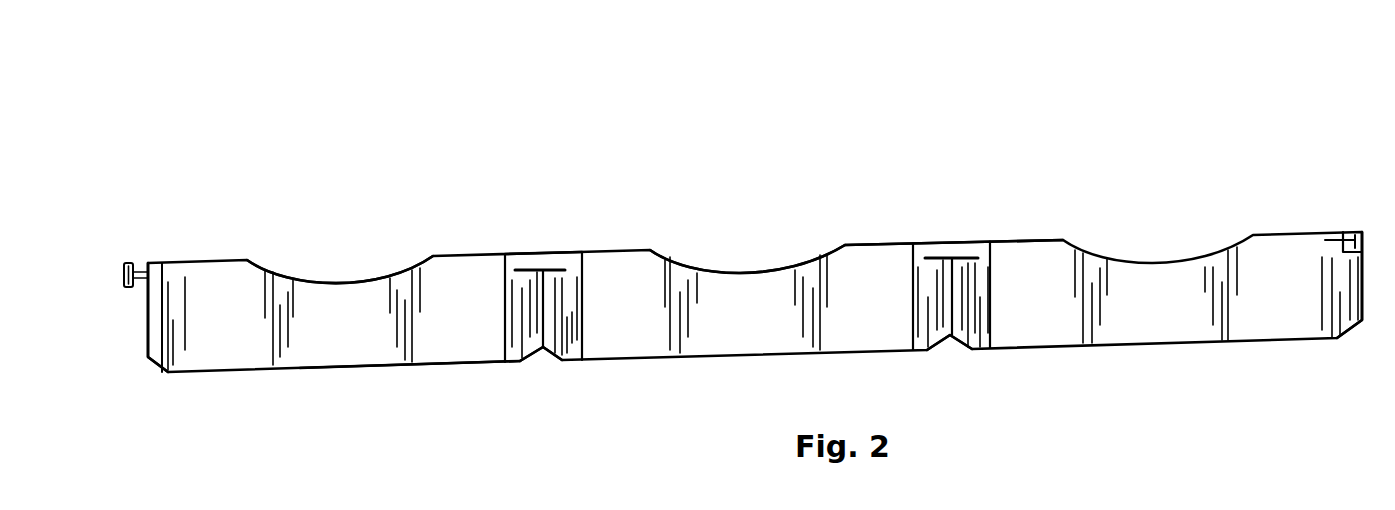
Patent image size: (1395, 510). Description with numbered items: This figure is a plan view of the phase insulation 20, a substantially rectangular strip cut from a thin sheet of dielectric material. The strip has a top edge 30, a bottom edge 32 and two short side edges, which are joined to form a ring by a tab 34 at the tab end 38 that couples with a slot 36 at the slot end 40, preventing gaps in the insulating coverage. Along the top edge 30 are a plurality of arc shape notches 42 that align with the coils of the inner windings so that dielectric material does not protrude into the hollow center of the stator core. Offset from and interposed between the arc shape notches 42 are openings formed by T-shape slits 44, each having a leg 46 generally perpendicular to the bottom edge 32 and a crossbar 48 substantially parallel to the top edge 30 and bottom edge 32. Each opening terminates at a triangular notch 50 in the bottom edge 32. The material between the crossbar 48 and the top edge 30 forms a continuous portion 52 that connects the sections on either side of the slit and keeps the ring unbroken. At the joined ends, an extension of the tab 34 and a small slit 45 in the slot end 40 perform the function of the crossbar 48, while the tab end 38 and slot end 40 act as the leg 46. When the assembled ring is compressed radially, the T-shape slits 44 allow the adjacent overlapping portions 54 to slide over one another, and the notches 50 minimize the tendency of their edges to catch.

The phase insulation 20 is at (298, 98).
The top edge 30 is at (863, 243).
The bottom edge 32 is at (380, 368).
The tab 34 is at (138, 268).
The slot 36 is at (1325, 240).
The tab end 38 is at (148, 332).
The slot end 40 is at (1362, 292).
The arc shape notches 42 is at (342, 185).
The T-shape slits 44 is at (550, 167).
The small slit 45 is at (1347, 250).
The leg 46 is at (543, 302).
The crossbar 48 is at (537, 270).
The notch 50 is at (553, 381).
The continuous portion 52 is at (552, 260).
The overlapping portions 54 is at (520, 360).